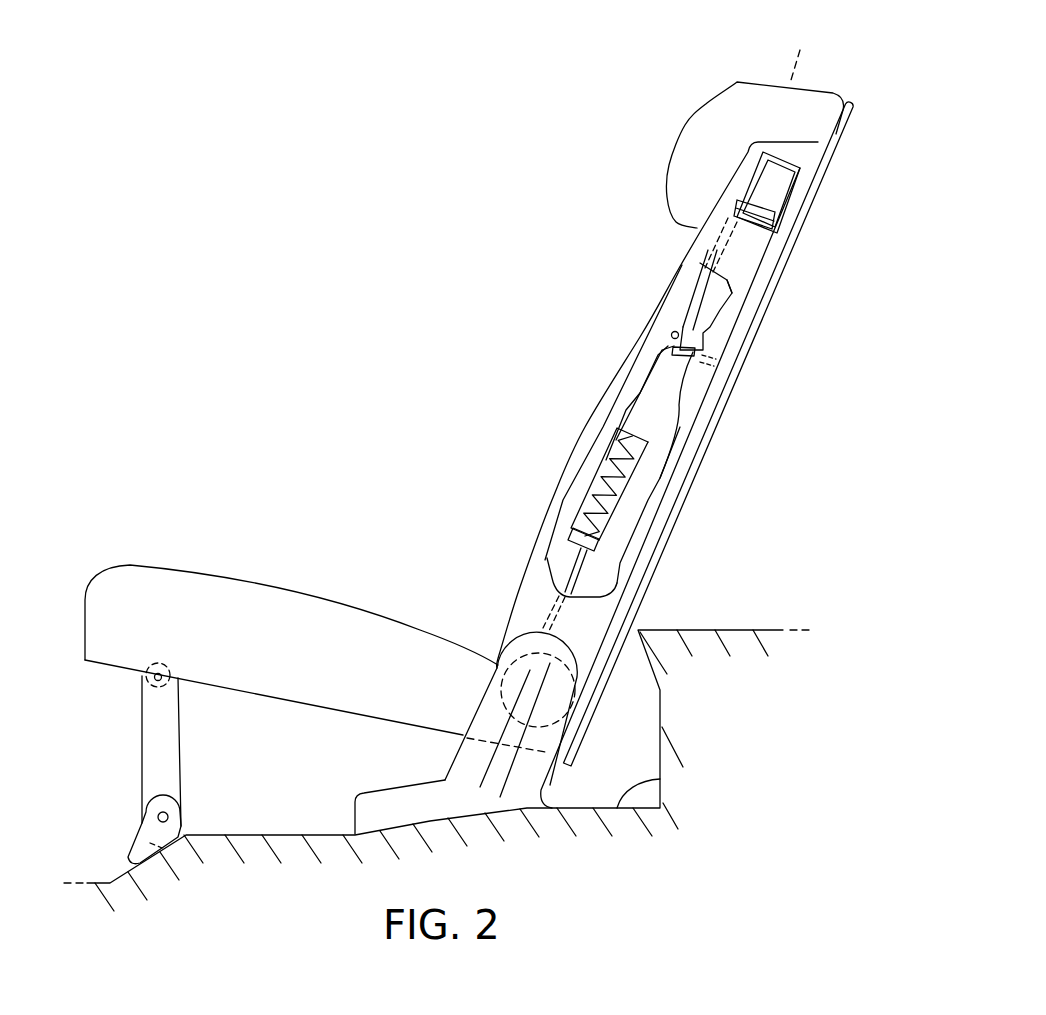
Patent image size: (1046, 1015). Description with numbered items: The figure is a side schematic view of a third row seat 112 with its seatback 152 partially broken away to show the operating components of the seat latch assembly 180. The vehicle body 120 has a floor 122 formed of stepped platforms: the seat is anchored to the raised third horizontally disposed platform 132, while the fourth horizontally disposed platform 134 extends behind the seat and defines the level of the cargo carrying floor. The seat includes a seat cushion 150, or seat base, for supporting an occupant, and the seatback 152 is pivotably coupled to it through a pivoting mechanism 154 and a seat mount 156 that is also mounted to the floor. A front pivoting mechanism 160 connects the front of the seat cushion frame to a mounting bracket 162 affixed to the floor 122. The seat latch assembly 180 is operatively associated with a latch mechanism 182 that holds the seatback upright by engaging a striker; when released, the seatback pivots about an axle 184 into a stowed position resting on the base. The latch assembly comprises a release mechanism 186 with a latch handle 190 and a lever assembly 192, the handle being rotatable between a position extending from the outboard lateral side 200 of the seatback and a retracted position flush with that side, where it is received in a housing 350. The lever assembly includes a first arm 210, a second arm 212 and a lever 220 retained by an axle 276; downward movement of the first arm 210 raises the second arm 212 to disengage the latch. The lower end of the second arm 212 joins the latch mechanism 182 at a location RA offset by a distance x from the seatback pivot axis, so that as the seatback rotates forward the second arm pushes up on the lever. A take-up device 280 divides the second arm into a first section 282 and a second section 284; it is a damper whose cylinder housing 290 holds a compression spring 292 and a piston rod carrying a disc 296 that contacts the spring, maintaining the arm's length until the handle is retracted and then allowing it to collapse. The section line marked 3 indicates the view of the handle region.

The third row seat 112 is at (505, 296).
The vehicle body 120 is at (294, 836).
The floor 122 is at (232, 832).
The third horizontally disposed platform 132 is at (660, 780).
The fourth horizontally disposed platform 134 is at (733, 628).
The seat cushion 150 is at (241, 580).
The seatback 152 is at (703, 290).
The pivoting mechanism 154 is at (575, 689).
The seat mount 156 is at (508, 806).
The front pivoting mechanism 160 is at (140, 752).
The mounting bracket 162 is at (147, 850).
The seat latch assembly 180 is at (698, 407).
The latch mechanism 182 is at (508, 628).
The axle 184 is at (577, 655).
The release mechanism 186 is at (660, 461).
The latch handle 190 is at (766, 226).
The lever assembly 192 is at (642, 330).
The outboard lateral side 200 is at (745, 315).
The first arm 210 is at (700, 300).
The second arm 212 is at (650, 378).
The lever 220 is at (672, 314).
The axle 276 is at (693, 346).
The take-up device 280 is at (580, 486).
The first section 282 is at (640, 400).
The second section 284 is at (565, 568).
The cylinder housing 290 is at (613, 452).
The compression spring 292 is at (617, 508).
The disc 296 is at (596, 546).
The housing 350 is at (767, 173).
The section line 3- 3 is at (795, 40).
The location RA is at (500, 672).
The distance x is at (530, 791).